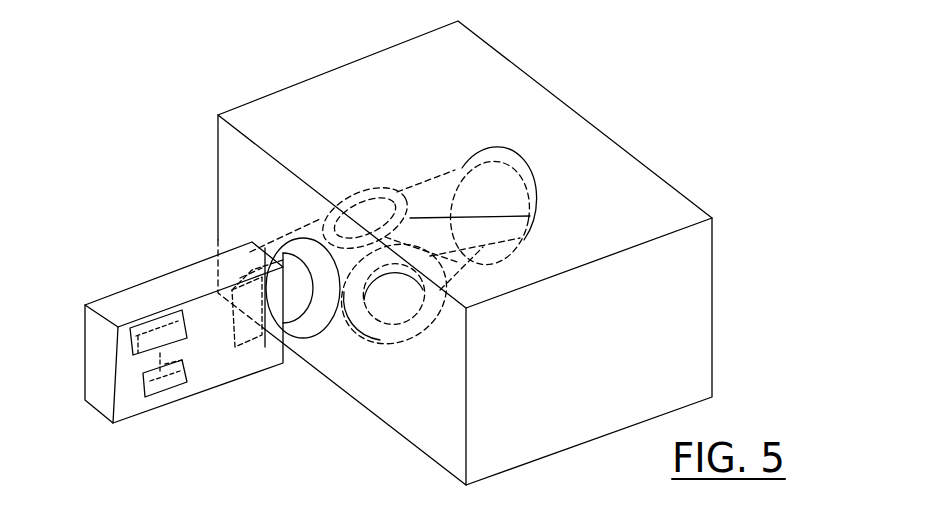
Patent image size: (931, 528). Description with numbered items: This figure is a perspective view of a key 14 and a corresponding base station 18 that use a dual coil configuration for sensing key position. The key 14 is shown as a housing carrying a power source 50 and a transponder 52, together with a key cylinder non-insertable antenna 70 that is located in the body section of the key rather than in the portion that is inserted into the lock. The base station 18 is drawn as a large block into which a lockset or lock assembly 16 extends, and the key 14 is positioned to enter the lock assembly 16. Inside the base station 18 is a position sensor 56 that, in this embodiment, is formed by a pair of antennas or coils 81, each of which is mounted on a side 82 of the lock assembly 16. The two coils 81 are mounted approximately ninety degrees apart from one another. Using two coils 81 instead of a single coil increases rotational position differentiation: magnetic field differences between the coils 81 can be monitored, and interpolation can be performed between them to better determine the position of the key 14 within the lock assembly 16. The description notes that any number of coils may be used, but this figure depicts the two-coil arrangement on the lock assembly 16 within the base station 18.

The key 14 is at (178, 268).
The lock assembly 16 is at (455, 172).
The base station 18 is at (531, 292).
The power source 50 is at (167, 393).
The transponder 52 is at (185, 343).
The position sensor 56 is at (475, 258).
The key cylinder non-insertable antenna 70 is at (250, 333).
The coils 81 is at (365, 190).
The side 82 is at (505, 197).